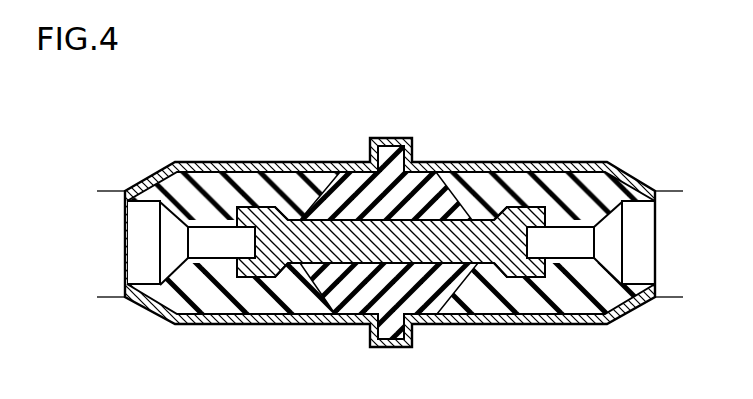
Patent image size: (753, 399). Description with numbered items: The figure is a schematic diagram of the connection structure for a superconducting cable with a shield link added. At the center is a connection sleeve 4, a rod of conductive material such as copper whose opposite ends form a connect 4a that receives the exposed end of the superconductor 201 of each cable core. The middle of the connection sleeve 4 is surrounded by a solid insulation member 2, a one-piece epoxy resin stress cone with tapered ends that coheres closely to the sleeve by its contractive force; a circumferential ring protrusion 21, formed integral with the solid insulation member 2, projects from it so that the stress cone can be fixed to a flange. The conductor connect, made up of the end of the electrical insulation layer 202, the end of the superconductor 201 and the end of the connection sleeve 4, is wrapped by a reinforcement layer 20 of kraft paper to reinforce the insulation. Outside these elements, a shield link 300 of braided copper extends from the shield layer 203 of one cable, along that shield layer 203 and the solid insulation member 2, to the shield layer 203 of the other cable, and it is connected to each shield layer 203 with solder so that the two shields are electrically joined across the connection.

The solid insulation member 2 is at (433, 205).
The reinforcement layer 20 is at (490, 195).
The circumferential ring protrusion 21 is at (370, 150).
The superconductor 201 is at (208, 238).
The electrical insulation layer 202 is at (142, 217).
The shield layer 203 is at (113, 285).
The shield link 300 is at (325, 321).
The connection sleeve 4 is at (433, 250).
The connect 4a is at (260, 274).